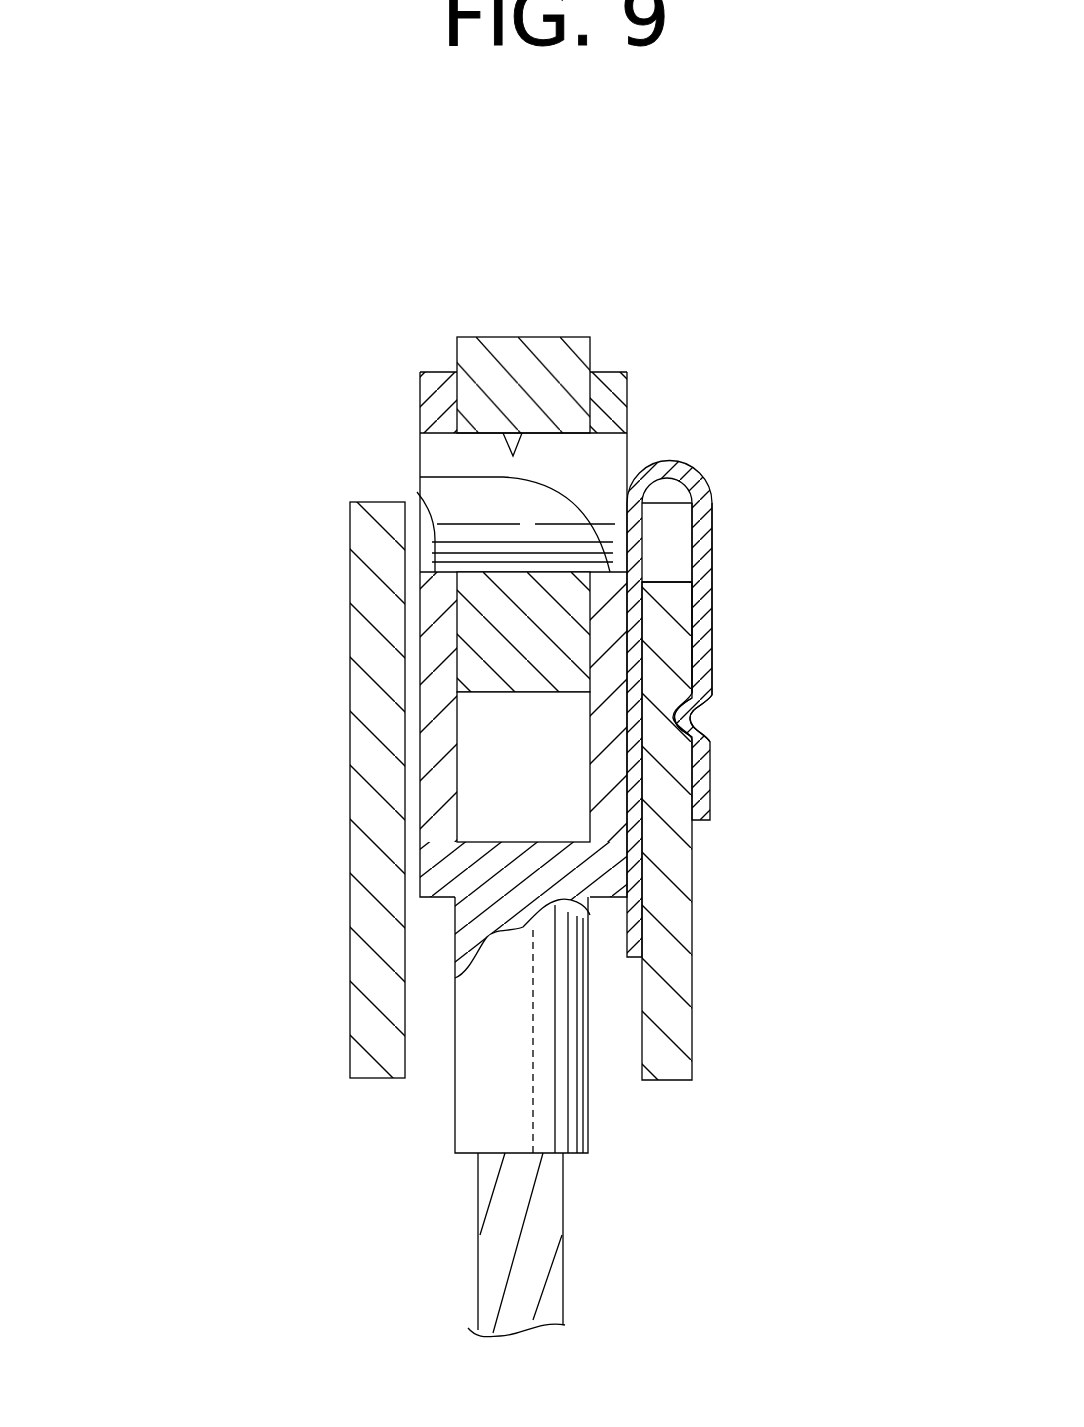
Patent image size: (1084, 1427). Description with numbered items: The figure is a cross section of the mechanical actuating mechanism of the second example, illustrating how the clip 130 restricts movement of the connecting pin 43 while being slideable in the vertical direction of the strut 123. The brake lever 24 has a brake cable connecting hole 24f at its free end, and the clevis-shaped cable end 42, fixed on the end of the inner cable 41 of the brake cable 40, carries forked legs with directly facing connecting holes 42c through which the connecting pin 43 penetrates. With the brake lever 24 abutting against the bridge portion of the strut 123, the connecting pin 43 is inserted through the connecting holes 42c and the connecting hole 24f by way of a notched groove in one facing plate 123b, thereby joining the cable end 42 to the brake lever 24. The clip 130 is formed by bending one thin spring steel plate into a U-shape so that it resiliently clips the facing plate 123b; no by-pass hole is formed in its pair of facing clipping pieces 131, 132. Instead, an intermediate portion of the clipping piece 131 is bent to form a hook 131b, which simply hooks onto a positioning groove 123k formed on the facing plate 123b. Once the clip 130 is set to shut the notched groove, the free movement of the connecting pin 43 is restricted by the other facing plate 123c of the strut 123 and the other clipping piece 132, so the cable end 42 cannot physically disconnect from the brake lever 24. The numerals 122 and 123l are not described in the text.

The connector 122 is at (415, 333).
The brake lever 24 is at (550, 337).
The brake cable connecting hole 24f is at (512, 440).
The connecting pin 43 is at (445, 450).
The connecting hole 42c is at (435, 535).
The clip 130 is at (727, 642).
The clipping piece 131 is at (712, 640).
The hook 131b is at (697, 717).
The hole of terminal 123l is at (667, 545).
The strut 123 is at (501, 792).
The facing plate 123c is at (347, 1025).
The facing plate 123b is at (734, 832).
The positioning groove 123k is at (698, 730).
The clipping piece 132 is at (590, 730).
The brake cable 40 is at (549, 1117).
The inner cable 41 is at (478, 1232).
The cable end 42 is at (588, 1093).